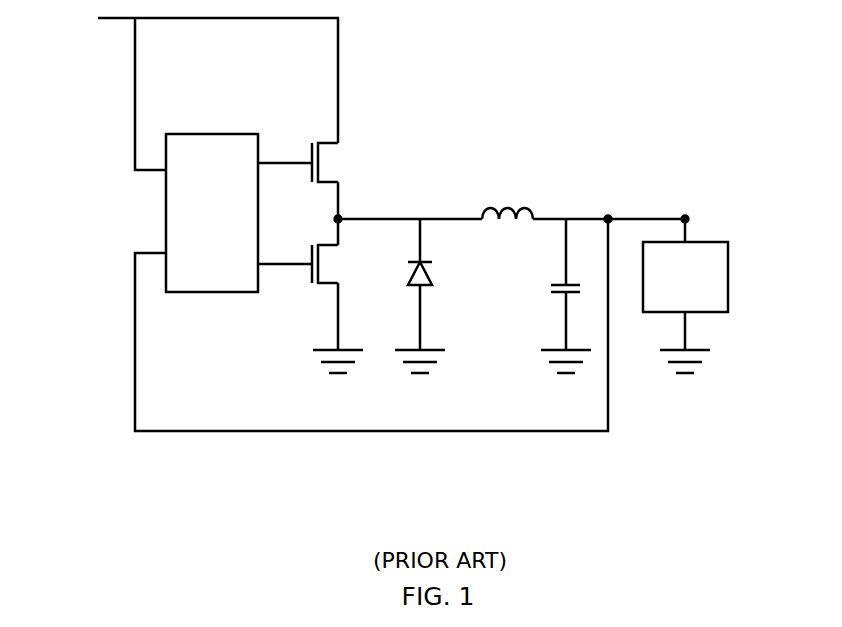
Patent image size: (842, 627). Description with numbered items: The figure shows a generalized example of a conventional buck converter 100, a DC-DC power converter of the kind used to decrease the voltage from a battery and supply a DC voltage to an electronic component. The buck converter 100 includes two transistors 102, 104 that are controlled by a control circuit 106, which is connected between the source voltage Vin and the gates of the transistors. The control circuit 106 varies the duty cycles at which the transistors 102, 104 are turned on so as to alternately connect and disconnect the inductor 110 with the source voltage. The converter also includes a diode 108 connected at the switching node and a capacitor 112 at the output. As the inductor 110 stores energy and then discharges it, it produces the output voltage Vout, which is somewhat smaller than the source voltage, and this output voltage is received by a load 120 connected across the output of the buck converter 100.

The buck converter 100 is at (616, 118).
The transistor 102 is at (328, 182).
The transistor 104 is at (328, 283).
The control circuit 106 is at (232, 134).
The diode 108 is at (424, 260).
The inductor 110 is at (507, 207).
The capacitor 112 is at (562, 280).
The load 120 is at (728, 250).